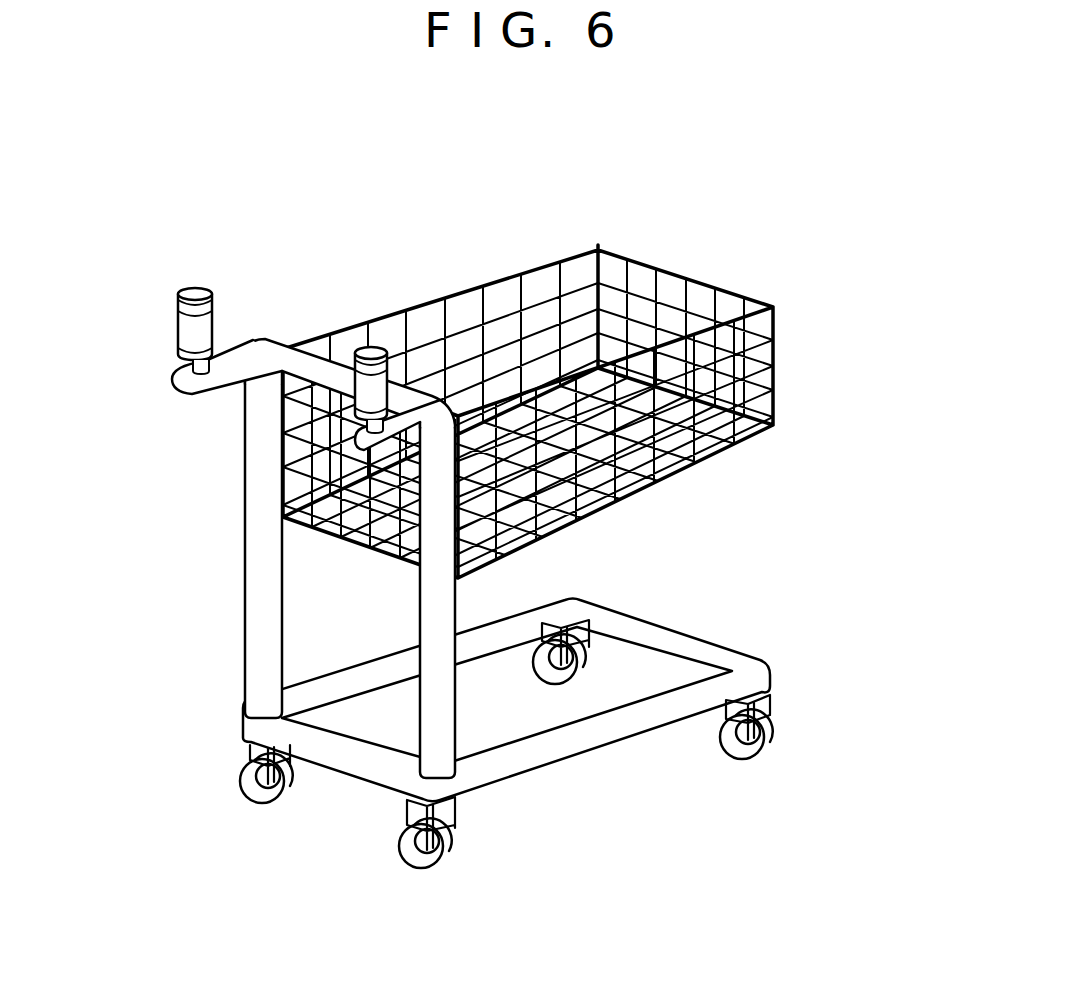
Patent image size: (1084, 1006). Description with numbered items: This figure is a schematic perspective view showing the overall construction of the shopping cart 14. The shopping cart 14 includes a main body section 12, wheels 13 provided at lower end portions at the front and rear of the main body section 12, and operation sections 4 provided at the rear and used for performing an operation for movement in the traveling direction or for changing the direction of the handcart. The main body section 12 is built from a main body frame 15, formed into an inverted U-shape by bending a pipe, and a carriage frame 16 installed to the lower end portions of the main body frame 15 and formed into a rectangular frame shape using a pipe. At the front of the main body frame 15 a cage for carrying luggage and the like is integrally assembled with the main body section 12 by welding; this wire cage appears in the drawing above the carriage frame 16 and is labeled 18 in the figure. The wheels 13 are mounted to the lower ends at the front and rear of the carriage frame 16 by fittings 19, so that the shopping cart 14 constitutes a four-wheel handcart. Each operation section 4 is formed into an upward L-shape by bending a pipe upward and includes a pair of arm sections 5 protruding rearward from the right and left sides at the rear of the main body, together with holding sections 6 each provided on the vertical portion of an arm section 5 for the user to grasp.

The operation section 4 is at (147, 381).
The arm section 5 is at (230, 352).
The holding section 6 is at (183, 327).
The main body section 12 is at (447, 586).
The wheel 13 is at (218, 783).
The shopping cart 14 is at (494, 566).
The main body frame 15 is at (262, 577).
The carriage frame 16 is at (672, 637).
The basket 18 is at (733, 263).
The fitting 19 is at (274, 764).